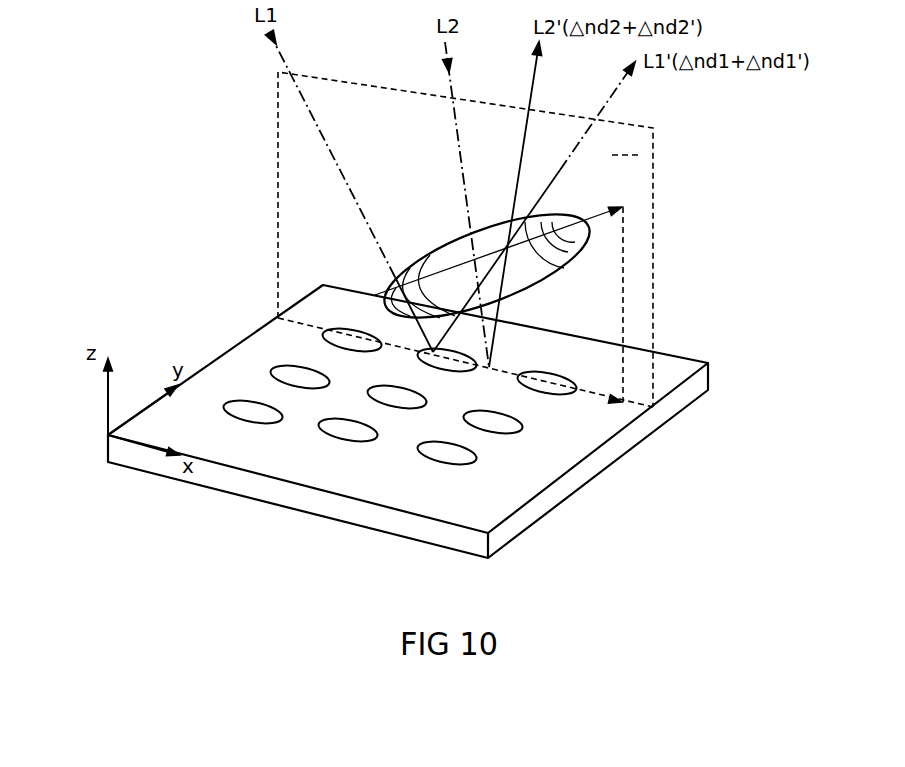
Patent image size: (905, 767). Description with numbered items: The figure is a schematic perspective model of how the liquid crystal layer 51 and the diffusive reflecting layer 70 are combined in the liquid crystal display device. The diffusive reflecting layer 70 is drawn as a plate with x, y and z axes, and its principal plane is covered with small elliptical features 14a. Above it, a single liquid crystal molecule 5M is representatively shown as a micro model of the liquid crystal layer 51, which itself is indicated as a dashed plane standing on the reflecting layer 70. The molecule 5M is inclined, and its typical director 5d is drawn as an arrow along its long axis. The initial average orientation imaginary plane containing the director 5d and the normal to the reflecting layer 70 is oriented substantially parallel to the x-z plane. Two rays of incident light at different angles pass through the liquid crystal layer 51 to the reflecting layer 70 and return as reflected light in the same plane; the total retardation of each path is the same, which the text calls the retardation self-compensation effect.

The diffusive reflecting layer 70 is at (738, 380).
The hole / recess 14a is at (460, 457).
The liquid crystal layer 51 is at (700, 240).
The liquid crystal molecule 5M is at (572, 215).
The director 5d is at (508, 290).